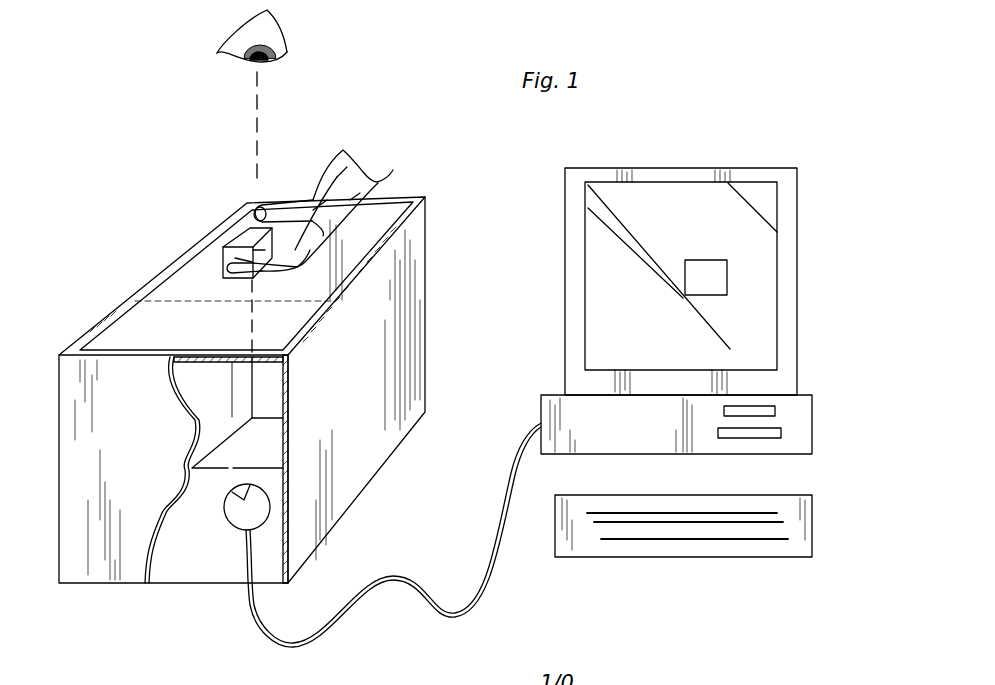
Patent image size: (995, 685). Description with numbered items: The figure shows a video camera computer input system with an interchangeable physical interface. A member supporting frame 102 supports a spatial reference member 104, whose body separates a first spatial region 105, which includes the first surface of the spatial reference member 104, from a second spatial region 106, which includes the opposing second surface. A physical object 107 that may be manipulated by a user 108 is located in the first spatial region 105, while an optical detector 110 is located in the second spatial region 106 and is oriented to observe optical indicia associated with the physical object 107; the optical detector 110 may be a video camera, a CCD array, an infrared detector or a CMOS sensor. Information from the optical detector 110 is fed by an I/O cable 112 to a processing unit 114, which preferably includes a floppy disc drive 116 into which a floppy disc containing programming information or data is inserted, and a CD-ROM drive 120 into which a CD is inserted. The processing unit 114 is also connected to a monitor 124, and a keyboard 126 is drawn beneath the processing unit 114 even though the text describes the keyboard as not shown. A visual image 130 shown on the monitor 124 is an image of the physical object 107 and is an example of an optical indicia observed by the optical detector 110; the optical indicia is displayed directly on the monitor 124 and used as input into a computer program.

The member supporting frame 102 is at (427, 324).
The spatial reference member 104 is at (385, 212).
The first spatial region 105 is at (92, 295).
The second spatial region 106 is at (157, 445).
The physical object 107 is at (243, 237).
The user 108 is at (372, 168).
The optical detector 110 is at (258, 512).
The I/O cable 112 is at (332, 633).
The processing unit 114 is at (541, 416).
The floppy disc drive 116 is at (772, 411).
The CD-ROM drive 120 is at (772, 431).
The monitor 124 is at (697, 168).
The keyboard 126 is at (650, 558).
The visual image 130 is at (710, 260).